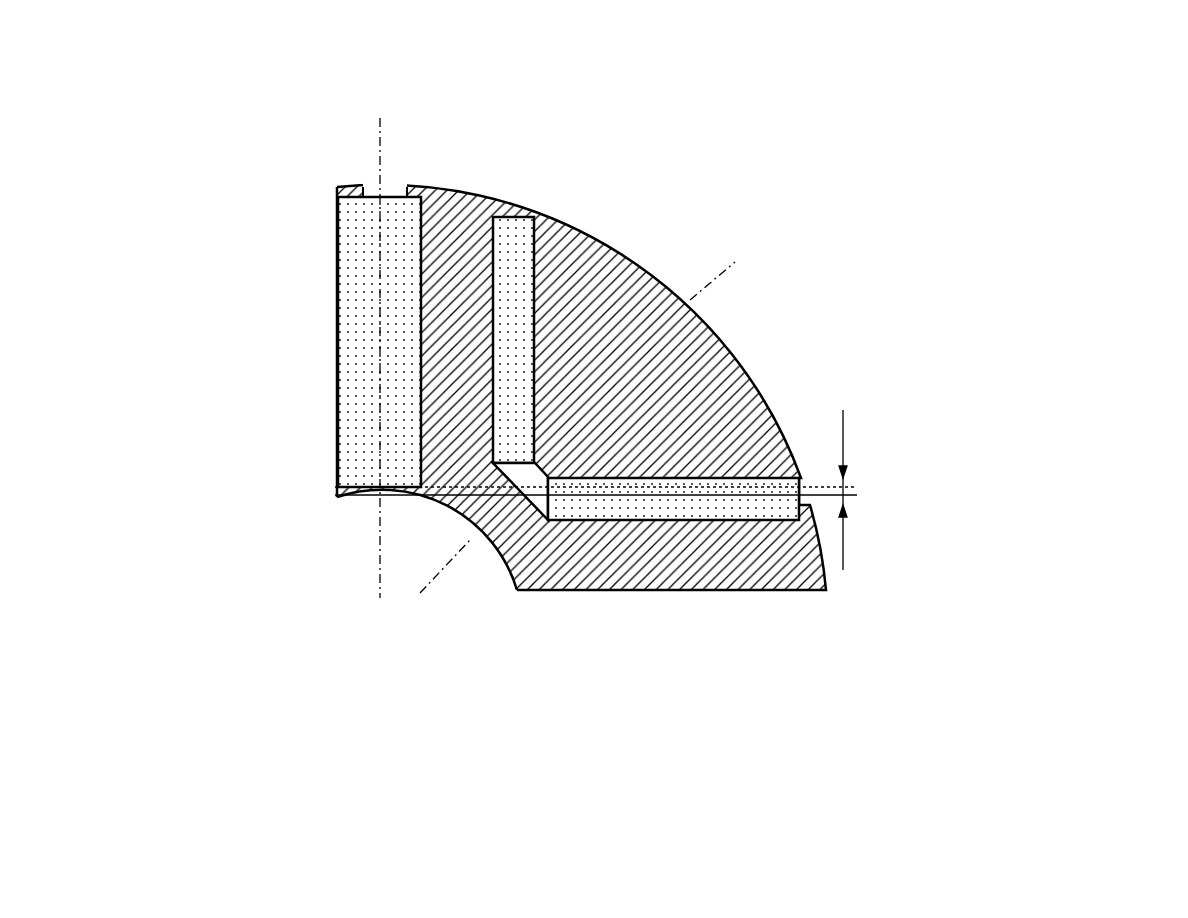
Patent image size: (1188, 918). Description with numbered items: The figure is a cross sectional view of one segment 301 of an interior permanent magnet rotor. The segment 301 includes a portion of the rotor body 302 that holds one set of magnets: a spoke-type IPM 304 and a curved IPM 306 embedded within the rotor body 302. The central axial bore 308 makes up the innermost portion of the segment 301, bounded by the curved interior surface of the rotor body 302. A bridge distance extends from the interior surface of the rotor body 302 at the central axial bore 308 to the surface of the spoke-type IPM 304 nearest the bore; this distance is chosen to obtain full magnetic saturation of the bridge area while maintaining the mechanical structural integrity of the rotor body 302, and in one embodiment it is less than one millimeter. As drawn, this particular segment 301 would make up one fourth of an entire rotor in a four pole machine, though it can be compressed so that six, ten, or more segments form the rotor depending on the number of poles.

The segment 301 is at (293, 160).
The rotor body 302 is at (455, 215).
The spoke-type IPM 304 is at (396, 288).
The curved IPM 306 is at (520, 382).
The central axial bore 308 is at (395, 563).